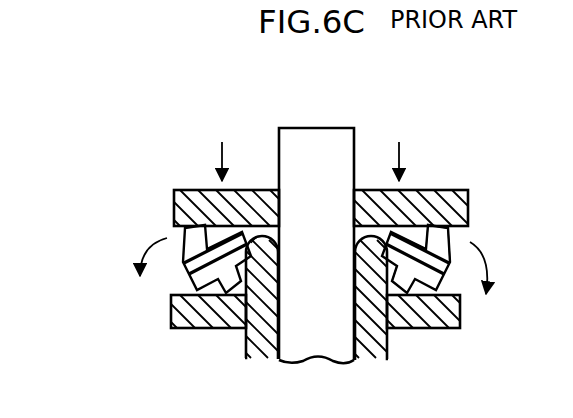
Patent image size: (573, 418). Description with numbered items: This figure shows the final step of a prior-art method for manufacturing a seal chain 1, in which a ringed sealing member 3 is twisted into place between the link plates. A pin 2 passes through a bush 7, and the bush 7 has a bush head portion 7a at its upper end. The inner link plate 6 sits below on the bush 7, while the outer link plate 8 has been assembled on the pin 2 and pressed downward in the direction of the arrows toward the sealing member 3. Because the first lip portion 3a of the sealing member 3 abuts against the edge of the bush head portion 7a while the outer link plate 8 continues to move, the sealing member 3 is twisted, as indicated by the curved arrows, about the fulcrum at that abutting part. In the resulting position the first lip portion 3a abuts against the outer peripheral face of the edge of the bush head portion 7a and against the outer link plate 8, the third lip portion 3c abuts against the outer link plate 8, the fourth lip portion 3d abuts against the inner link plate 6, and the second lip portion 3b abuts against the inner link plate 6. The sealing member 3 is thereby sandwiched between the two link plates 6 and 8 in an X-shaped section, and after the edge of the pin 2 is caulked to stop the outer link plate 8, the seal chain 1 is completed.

The seal chain 1 is at (70, 141).
The pin 2 is at (319, 150).
The sealing member 3 is at (172, 283).
The first lip portion 3a is at (397, 232).
The second lip portion 3b is at (458, 296).
The third lip portion 3c is at (455, 226).
The fourth lip portion 3d is at (402, 323).
The inner link plate 6 is at (172, 316).
The bush 7 is at (243, 346).
The bush head portion 7a is at (265, 240).
The outer link plate 8 is at (185, 192).